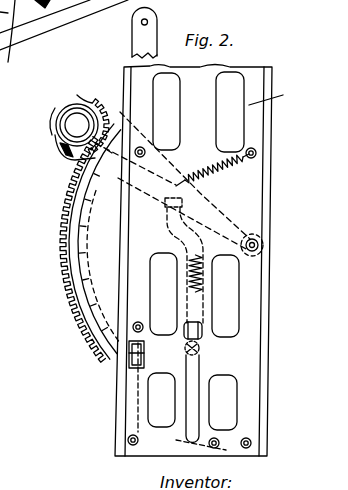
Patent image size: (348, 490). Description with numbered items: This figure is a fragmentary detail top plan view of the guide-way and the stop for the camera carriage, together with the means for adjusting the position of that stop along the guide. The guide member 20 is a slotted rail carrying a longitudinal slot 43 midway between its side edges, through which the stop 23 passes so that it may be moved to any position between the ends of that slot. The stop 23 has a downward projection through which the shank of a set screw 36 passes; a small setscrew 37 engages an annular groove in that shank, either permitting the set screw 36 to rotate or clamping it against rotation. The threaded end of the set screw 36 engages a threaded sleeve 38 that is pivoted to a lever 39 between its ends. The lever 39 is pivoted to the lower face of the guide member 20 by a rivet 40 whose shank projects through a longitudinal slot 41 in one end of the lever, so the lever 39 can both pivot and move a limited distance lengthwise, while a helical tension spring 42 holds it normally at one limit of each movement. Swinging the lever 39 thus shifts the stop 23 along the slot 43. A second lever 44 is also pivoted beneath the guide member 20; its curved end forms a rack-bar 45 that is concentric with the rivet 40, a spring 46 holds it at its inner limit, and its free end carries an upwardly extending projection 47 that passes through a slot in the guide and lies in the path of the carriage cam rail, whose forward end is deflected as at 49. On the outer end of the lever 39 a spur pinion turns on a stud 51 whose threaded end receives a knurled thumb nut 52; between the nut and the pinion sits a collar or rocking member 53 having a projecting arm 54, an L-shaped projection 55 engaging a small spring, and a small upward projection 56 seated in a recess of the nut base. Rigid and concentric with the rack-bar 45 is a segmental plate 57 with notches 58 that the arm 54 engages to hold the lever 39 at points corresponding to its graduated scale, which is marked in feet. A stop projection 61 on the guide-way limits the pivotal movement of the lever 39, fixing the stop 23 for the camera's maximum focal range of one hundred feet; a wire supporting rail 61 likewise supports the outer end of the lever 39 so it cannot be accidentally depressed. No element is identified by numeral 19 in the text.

The plate 19 is at (120, 395).
The guide member 20 is at (275, 96).
The stop 23 is at (185, 364).
The set screw shank 36 is at (203, 333).
The small setscrew 37 is at (200, 346).
The threaded sleeve 38 is at (204, 289).
The lever 39 is at (232, 213).
The rivet 40 is at (258, 245).
The longitudinal slot 41 is at (264, 256).
The helical tension spring 42 is at (262, 137).
The longitudinal slot 43 is at (180, 445).
The lever 44 is at (128, 50).
The rack-bar 45 is at (68, 304).
The spring 46 is at (133, 421).
The upwardly extending projection 47 is at (130, 353).
The curved or deflected portion 49 is at (15, 39).
The stud 51 is at (78, 125).
The knurled thumb nut 52 is at (67, 110).
The collar or rocking member 53 is at (60, 137).
The projecting arm 54 is at (105, 110).
The L-shaped projection 55 is at (66, 154).
The upwardly extending projection 56 is at (93, 106).
The segmental plate 57 is at (62, 278).
The notches 58 is at (63, 258).
The stop projection 61 is at (144, 154).